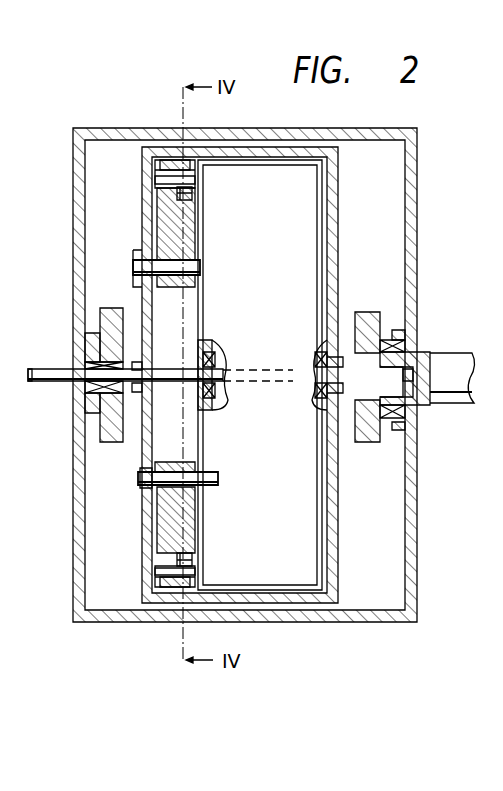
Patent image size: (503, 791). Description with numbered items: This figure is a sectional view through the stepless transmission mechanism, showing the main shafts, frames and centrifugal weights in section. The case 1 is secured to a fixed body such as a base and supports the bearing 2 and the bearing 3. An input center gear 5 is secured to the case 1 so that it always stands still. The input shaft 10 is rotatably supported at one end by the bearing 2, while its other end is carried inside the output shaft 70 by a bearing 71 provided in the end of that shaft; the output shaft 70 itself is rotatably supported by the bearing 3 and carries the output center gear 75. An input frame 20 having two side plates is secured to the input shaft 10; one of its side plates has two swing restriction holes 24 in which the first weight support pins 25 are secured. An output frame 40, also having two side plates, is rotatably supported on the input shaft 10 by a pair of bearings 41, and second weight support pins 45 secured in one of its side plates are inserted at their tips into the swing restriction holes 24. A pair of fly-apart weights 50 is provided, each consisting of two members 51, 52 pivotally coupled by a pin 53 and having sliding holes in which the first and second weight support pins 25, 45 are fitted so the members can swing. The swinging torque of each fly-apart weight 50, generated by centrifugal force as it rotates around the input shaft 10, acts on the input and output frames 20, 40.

The case 1 is at (72, 142).
The bearing 2 is at (72, 363).
The bearing 3 is at (405, 347).
The input center gear 5 is at (87, 323).
The input shaft 10 is at (44, 383).
The input frame 20 is at (142, 152).
The swing restriction holes 24 is at (140, 483).
The first weight support pins 25 is at (135, 266).
The output frame 40 is at (208, 512).
The bearings 41 is at (198, 395).
The second weight support pins 45 is at (142, 475).
The fly-apart weights 50 is at (168, 232).
The member 51 is at (167, 165).
The member 52 is at (190, 162).
The pin 53 is at (157, 180).
The output shaft 70 is at (438, 405).
The bearing 71 is at (420, 352).
The output center gear 75 is at (368, 318).